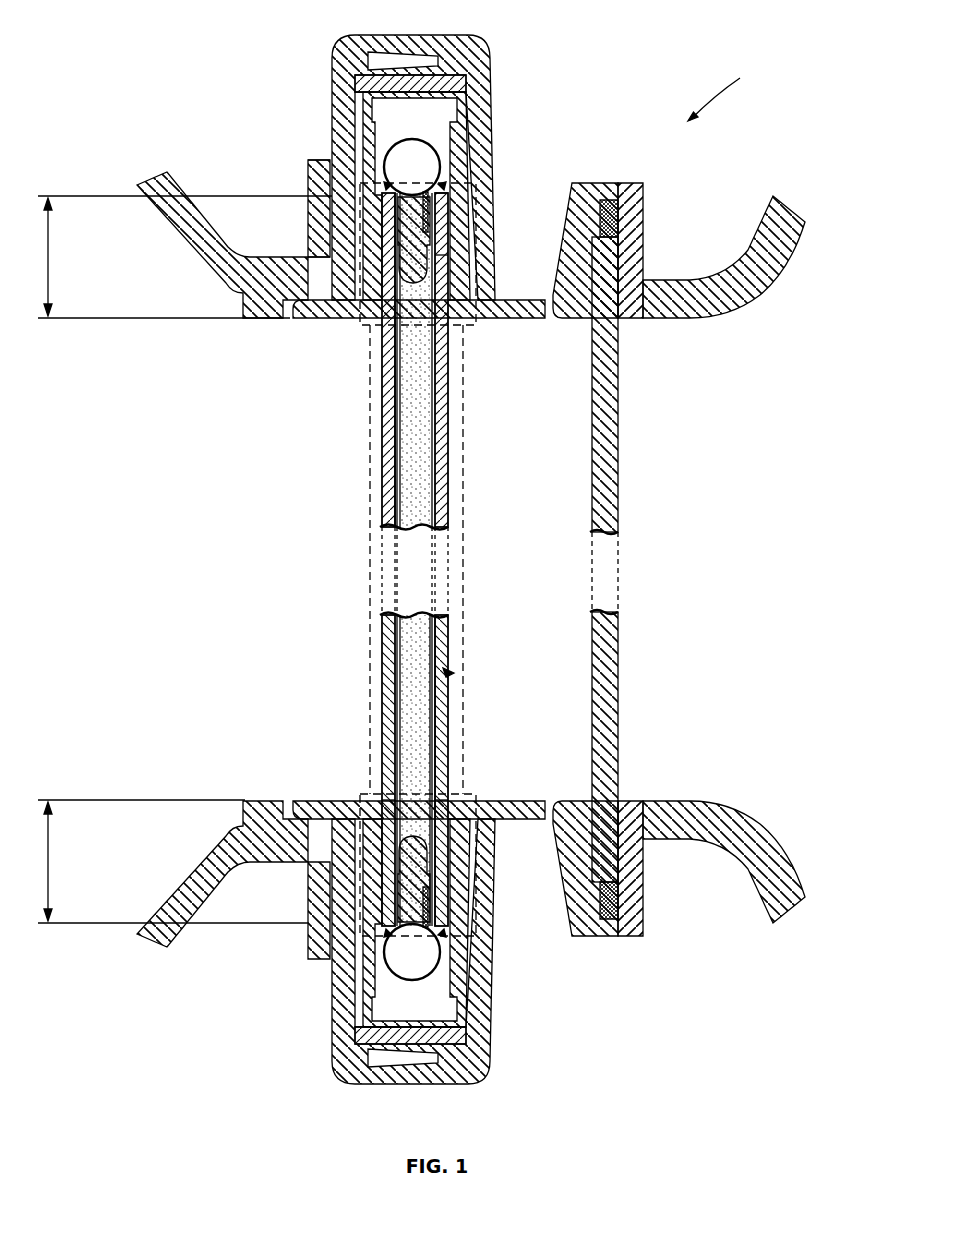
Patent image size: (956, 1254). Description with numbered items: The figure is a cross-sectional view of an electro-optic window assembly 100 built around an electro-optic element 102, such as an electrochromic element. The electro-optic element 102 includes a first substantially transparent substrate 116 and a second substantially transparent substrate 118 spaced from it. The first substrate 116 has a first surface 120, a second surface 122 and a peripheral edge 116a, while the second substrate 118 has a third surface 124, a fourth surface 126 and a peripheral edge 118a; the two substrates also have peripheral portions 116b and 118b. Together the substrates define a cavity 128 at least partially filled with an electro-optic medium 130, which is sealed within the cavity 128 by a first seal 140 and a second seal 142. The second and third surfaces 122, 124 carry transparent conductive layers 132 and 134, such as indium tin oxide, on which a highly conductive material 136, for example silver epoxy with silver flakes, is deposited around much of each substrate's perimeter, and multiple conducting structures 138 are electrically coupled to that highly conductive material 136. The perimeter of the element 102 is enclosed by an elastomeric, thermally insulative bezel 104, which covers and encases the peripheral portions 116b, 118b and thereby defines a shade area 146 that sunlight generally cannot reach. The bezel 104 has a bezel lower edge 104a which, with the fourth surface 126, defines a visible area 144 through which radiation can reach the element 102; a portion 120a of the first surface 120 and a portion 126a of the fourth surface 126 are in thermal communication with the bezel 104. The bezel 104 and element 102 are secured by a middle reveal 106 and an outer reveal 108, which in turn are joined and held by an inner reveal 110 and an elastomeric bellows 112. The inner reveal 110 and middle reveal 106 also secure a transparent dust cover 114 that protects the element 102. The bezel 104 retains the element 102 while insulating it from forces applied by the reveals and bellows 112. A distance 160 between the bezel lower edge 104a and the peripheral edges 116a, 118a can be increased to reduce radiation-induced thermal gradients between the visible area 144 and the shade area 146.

The electro-optic window assembly 100 is at (731, 91).
The electro-optic element 102 is at (452, 672).
The bezel 104 is at (466, 150).
The bezel lower edge 104a is at (307, 318).
The middle reveal 106 is at (580, 183).
The outer reveal 108 is at (333, 74).
The inner reveal 110 is at (728, 262).
The bellows 112 is at (175, 237).
The dust cover 114 is at (617, 378).
The first substantially transparent substrate 116 is at (448, 364).
The peripheral edge of first substrate 116a is at (448, 193).
The peripheral portion of first substrate 116b is at (448, 255).
The second substantially transparent substrate 118 is at (382, 340).
The peripheral edge of second substrate 118a is at (370, 168).
The peripheral portion of second substrate 118b is at (362, 262).
The first surface 120 is at (450, 710).
The portion of first surface 120a is at (505, 801).
The second surface 122 is at (437, 411).
The third surface 124 is at (397, 424).
The fourth surface 126 is at (384, 455).
The portion of fourth surface 126a is at (340, 803).
The cavity 128 is at (402, 502).
The electro-optic medium 130 is at (420, 480).
The transparent conductive layer 132 is at (430, 745).
The transparent conductive layer 134 is at (402, 733).
The highly conductive material 136 is at (386, 232).
The conducting structures 138 is at (430, 197).
The first seal 140 is at (447, 306).
The second seal 142 is at (428, 210).
The visible area 144 is at (370, 574).
The shade area 146 is at (445, 128).
The distance 160 is at (176, 559).